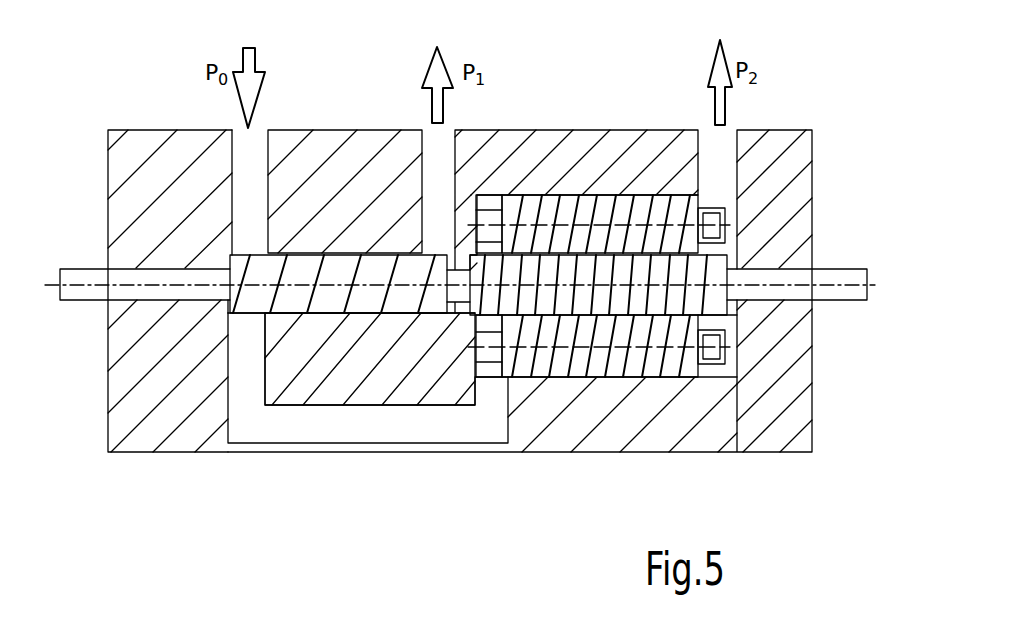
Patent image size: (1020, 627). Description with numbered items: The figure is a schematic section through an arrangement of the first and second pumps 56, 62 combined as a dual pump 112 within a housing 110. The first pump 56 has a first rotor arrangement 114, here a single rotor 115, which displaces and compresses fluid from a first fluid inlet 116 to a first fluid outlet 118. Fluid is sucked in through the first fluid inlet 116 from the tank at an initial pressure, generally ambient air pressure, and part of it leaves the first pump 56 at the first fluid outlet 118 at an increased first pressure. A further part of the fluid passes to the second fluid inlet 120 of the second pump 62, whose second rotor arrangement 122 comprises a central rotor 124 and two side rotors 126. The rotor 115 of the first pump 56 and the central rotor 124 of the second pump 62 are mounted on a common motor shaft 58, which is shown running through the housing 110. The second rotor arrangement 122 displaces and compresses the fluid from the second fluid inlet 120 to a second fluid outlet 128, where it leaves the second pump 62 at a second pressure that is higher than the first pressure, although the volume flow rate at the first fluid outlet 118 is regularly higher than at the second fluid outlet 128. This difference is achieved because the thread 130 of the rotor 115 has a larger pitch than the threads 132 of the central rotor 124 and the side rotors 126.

The first pump 56 is at (347, 110).
The motor shaft 58 is at (84, 292).
The second pump 62 is at (563, 110).
The housing 110 is at (133, 417).
The dual pump 112 is at (419, 496).
The first rotor arrangement 114 is at (338, 385).
The rotor 115 is at (300, 300).
The first fluid inlet 116 is at (261, 172).
The first fluid outlet 118 is at (450, 172).
The second fluid inlet 120 is at (477, 441).
The second rotor arrangement 122 is at (608, 398).
The central rotor 124 is at (730, 312).
The side rotors 126 is at (643, 203).
The second fluid outlet 128 is at (732, 173).
The thread 130 is at (380, 313).
The threads 132 is at (680, 313).